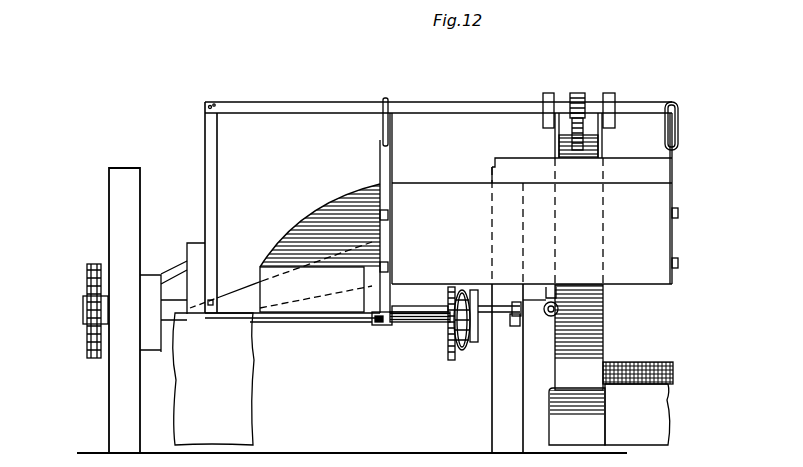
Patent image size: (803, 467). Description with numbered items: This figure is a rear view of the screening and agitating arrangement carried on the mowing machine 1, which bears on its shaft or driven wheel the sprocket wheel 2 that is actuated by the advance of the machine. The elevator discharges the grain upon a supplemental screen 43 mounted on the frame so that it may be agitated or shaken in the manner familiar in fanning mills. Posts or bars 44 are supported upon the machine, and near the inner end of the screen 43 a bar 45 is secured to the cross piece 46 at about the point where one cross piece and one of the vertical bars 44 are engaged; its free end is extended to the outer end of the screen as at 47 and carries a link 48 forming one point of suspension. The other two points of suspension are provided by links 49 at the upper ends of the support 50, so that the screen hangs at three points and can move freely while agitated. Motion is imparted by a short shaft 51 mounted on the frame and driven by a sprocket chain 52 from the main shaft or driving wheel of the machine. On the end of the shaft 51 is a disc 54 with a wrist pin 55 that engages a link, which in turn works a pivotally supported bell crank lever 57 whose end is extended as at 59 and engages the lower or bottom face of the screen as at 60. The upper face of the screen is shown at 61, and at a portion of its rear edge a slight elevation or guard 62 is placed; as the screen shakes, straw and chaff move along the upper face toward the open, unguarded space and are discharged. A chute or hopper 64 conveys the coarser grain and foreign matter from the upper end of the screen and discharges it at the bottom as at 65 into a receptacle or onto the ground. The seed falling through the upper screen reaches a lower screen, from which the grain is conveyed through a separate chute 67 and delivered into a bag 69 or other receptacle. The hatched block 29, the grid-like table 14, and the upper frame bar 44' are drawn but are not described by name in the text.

The mowing machine 1 is at (156, 261).
The sprocket wheel 2 is at (84, 313).
The grid table 14 is at (648, 372).
The hatched block 29 is at (600, 350).
The supplemental screen 43 is at (660, 178).
The posts or bars 44 is at (226, 207).
The frame top bar 44' is at (438, 91).
The bar 45 is at (500, 110).
The cross piece 46 is at (210, 315).
The free end of bar 47 is at (674, 104).
The link 48 is at (678, 132).
The links 49 is at (382, 128).
The support 50 is at (380, 160).
The short shaft 51 is at (416, 320).
The sprocket chain 52 is at (450, 347).
The disc 54 is at (465, 352).
The wrist pin 55 is at (480, 344).
The bell crank lever 57 is at (498, 302).
The extended end of bell crank lever 59 is at (514, 318).
The engagement point on bottom face of screen 60 is at (565, 285).
The upper face of screen 61 is at (456, 184).
The guard 62 is at (623, 172).
The chute or hopper 64 is at (342, 204).
The discharge point of chute 65 is at (319, 314).
The separate chute 67 is at (239, 274).
The bag 69 is at (241, 380).